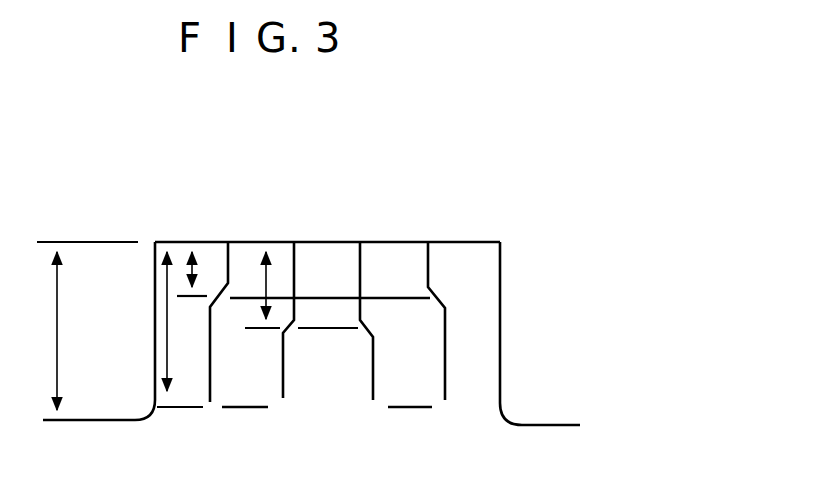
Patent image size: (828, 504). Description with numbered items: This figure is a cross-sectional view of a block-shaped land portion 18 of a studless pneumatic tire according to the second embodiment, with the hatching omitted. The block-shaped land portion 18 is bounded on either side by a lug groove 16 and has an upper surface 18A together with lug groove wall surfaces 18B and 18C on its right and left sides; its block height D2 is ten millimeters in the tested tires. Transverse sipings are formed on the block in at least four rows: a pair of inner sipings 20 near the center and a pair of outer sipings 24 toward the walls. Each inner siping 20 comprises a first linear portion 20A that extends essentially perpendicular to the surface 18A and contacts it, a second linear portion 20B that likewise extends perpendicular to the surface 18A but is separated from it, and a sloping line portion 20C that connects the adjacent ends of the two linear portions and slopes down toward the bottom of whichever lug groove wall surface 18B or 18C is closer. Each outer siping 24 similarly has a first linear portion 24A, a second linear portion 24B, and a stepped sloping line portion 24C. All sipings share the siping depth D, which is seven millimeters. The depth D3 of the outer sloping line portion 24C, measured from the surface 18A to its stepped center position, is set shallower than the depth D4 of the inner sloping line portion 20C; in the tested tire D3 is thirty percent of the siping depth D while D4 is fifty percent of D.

The lug groove 16 is at (147, 408).
The block-shaped land portion 18 is at (329, 310).
The surface of the block-shaped land portion 18A is at (500, 242).
The lug groove wall surface 18B is at (500, 357).
The lug groove wall surface 18C is at (155, 362).
The inner siping 20 is at (331, 314).
The first linear portion 20A is at (295, 300).
The second linear portion 20B is at (373, 385).
The sloping line portion 20C is at (360, 322).
The outer siping 24 is at (327, 307).
The first linear portion of the outer siping 24A is at (228, 283).
The second linear portion of the outer siping 24B is at (210, 385).
The sloping line portion of the outer siping 24C is at (208, 306).
The siping depth D is at (180, 329).
The block height D2 is at (55, 344).
The depth of the sloping line portion of the outer siping D3 is at (182, 272).
The depth of the sloping line portion of the inner siping D4 is at (263, 283).